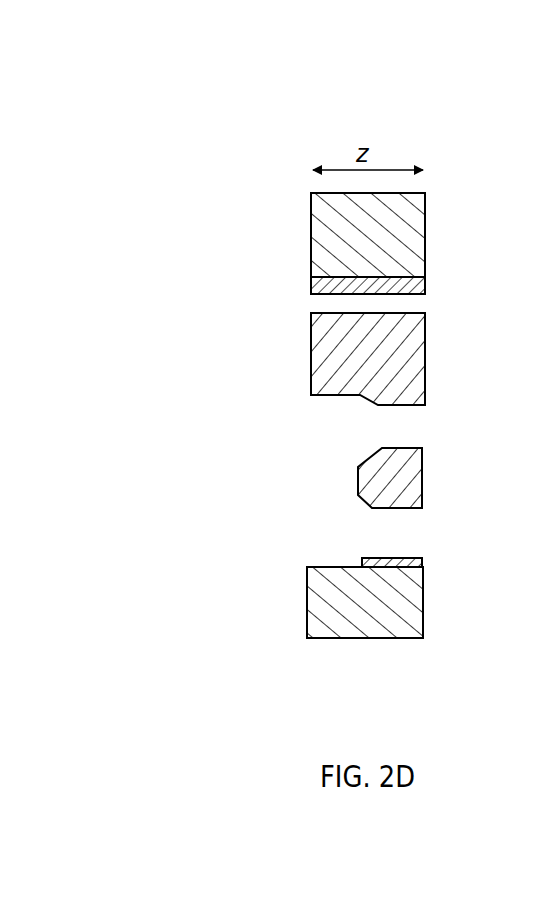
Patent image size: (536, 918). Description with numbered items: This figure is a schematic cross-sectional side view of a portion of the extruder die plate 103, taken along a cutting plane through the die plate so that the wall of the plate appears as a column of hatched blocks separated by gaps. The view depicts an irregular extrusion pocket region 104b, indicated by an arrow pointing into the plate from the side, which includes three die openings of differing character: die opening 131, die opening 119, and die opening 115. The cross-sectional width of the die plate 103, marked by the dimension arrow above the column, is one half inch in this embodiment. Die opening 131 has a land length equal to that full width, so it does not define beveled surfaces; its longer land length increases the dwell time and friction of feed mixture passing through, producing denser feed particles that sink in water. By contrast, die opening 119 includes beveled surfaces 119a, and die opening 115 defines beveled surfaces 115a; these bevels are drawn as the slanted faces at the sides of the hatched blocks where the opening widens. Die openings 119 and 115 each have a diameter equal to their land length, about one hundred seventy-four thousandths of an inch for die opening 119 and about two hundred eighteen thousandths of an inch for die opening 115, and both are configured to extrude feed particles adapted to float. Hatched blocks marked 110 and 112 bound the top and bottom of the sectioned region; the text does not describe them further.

The extruder die plate 103 is at (257, 105).
The irregular extrusion pocket region 104b is at (206, 428).
The substrate 110 is at (405, 229).
The die opening 131 is at (405, 304).
The beveled surfaces 119a is at (318, 429).
The die opening 119 is at (390, 458).
The beveled surfaces 115a is at (323, 534).
The die opening 115 is at (392, 541).
The carrier 112 is at (393, 600).